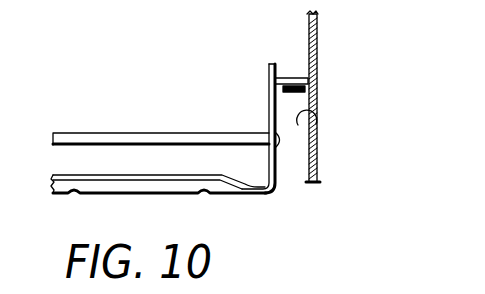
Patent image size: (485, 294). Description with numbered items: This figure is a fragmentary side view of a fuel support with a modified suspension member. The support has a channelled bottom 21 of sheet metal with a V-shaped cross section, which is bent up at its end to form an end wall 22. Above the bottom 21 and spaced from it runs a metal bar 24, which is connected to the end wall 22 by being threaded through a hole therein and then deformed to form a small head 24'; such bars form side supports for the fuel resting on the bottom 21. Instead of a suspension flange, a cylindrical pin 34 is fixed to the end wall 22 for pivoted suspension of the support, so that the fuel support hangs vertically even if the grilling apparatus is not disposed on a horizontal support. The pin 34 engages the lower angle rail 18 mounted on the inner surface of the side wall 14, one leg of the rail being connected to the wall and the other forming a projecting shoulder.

The side wall 14 is at (318, 47).
The metal bar 24 is at (161, 115).
The end wall 22 is at (280, 183).
The channelled bottom 21 is at (62, 193).
The cylindrical pin 34 is at (293, 77).
The lower angle rail 18 is at (316, 124).
The small head 24' is at (323, 153).